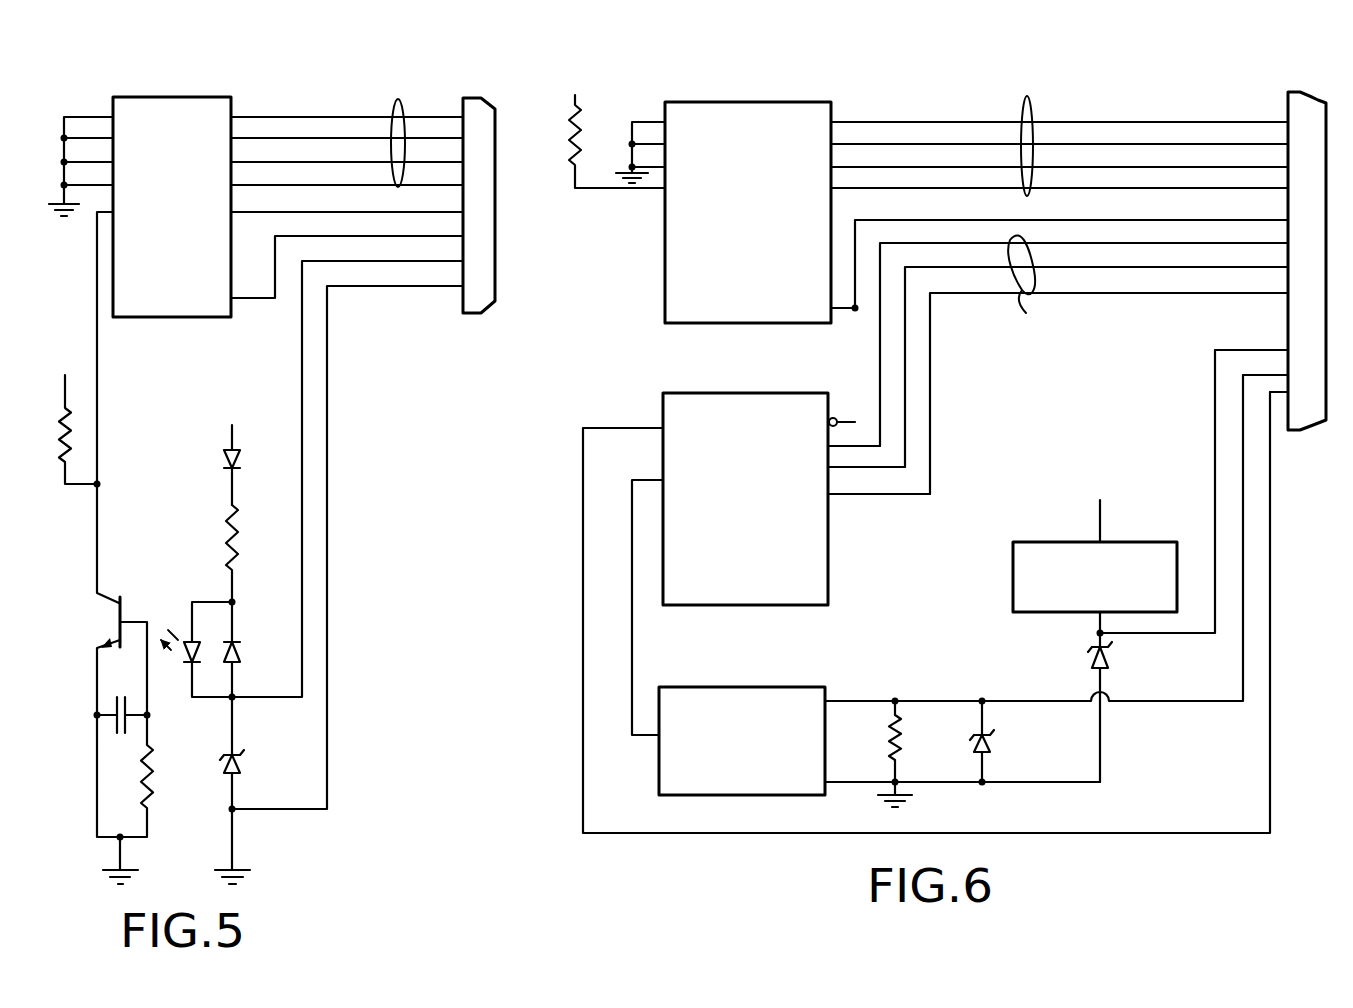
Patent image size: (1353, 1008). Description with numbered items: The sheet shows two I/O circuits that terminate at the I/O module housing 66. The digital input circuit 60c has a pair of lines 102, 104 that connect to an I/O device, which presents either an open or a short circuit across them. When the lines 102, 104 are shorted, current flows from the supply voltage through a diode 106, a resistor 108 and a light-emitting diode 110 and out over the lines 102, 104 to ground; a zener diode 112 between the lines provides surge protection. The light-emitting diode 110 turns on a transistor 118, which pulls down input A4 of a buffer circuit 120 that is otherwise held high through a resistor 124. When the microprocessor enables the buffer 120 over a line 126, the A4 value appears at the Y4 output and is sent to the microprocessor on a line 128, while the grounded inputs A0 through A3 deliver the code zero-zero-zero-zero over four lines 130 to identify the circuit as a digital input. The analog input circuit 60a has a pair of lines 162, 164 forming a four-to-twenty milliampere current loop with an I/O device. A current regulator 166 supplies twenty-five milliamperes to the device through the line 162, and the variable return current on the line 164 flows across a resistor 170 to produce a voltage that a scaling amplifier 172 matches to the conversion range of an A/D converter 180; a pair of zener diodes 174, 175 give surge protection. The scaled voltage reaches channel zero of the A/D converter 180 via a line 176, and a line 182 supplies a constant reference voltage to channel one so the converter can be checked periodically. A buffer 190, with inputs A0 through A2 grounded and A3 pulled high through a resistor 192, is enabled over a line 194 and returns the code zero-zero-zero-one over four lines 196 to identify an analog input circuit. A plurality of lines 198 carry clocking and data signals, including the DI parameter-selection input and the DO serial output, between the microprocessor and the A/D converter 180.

In FIG. 5, the buffer circuit 120 is at (163, 97).
In FIG. 5, the four lines 130 is at (398, 100).
In FIG. 5, the line 128 is at (272, 212).
In FIG. 5, the line 126 is at (262, 300).
In FIG. 5, the line 102 is at (302, 568).
In FIG. 5, the line 104 is at (327, 566).
In FIG. 5, the I/O module housing 66 is at (497, 263).
In FIG. 6, the I/O module housing 66 is at (1286, 331).
In FIG. 5, the digital input circuit 60c is at (292, 102).
In FIG. 5, the resistor 124 is at (53, 446).
In FIG. 5, the transistor 118 is at (119, 602).
In FIG. 5, the diode 106 is at (226, 454).
In FIG. 5, the resistor 108 is at (229, 538).
In FIG. 5, the light-emitting diode 110 is at (190, 635).
In FIG. 5, the zener diode 112 is at (241, 761).
In FIG. 6, the buffer 190 is at (762, 102).
In FIG. 6, the resistor 192 is at (571, 142).
In FIG. 6, the four lines 196 is at (1025, 97).
In FIG. 6, the line 194 is at (855, 378).
In FIG. 6, the lines 198 is at (1084, 364).
In FIG. 6, the analog input circuit 60a is at (1324, 64).
In FIG. 6, the line 162 is at (1215, 416).
In FIG. 6, the line 164 is at (1243, 462).
In FIG. 6, the A/D converter 180 is at (828, 570).
In FIG. 6, the line 182 is at (583, 503).
In FIG. 6, the line 176 is at (632, 641).
In FIG. 6, the scaling amplifier 172 is at (785, 687).
In FIG. 6, the resistor 170 is at (890, 745).
In FIG. 6, the zener diode 174 is at (992, 738).
In FIG. 6, the current regulator 166 is at (1013, 581).
In FIG. 6, the zener diode 175 is at (1091, 661).